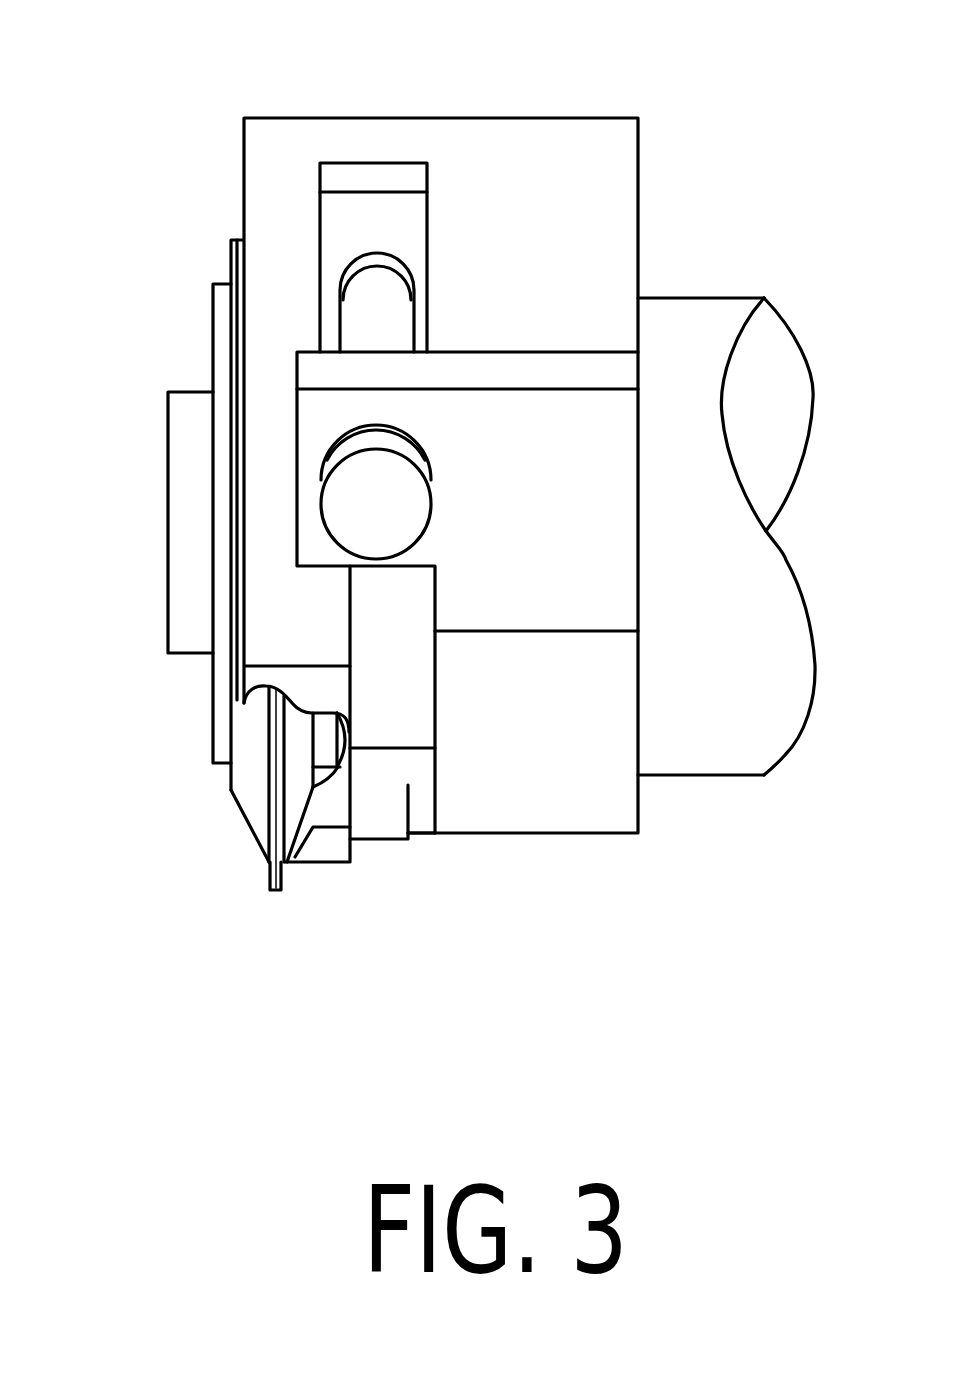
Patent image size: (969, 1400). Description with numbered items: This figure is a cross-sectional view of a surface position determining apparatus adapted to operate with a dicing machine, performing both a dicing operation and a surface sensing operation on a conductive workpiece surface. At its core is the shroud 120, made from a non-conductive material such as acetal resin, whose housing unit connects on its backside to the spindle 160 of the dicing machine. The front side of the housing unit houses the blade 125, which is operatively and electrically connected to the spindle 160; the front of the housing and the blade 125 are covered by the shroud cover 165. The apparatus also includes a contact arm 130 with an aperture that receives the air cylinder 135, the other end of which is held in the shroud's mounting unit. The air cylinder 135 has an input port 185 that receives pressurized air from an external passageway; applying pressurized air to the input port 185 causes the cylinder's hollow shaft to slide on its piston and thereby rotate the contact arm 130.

The shroud 120 is at (472, 118).
The blade 125 is at (273, 892).
The contact arm 130 is at (380, 842).
The air cylinder 135 is at (378, 302).
The spindle 160 is at (727, 298).
The shroud cover 165 is at (237, 794).
The input port 185 is at (382, 502).